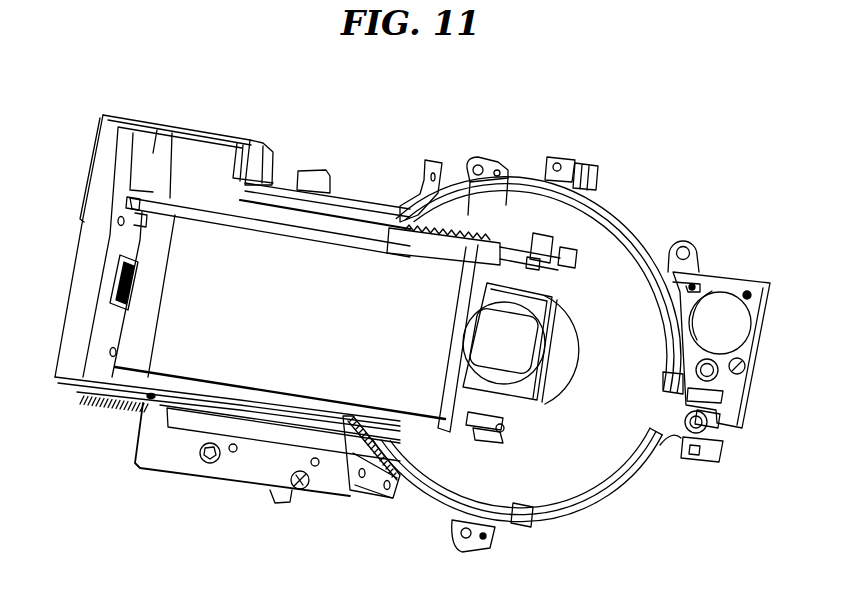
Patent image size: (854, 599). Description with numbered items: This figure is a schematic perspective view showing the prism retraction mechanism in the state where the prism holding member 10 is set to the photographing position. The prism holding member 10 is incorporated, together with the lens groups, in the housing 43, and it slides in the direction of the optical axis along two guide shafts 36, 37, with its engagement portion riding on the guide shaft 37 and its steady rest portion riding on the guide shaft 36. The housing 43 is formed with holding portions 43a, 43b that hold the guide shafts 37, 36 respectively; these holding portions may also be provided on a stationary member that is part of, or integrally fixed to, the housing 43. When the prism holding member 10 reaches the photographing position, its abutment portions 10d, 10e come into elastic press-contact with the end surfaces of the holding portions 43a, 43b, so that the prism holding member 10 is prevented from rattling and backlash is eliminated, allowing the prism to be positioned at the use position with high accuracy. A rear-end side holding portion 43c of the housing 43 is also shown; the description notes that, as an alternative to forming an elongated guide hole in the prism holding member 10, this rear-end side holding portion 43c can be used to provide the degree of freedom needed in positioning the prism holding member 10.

The prism holding member 10 is at (500, 247).
The abutment portion 10d is at (540, 250).
The abutment portion 10e is at (480, 418).
The guide shaft 36 is at (278, 398).
The guide shaft 37 is at (255, 222).
The housing 43 is at (478, 168).
The holding portion 43a is at (548, 273).
The holding portion 43b is at (490, 433).
The rear-end side holding portion 43c is at (128, 198).